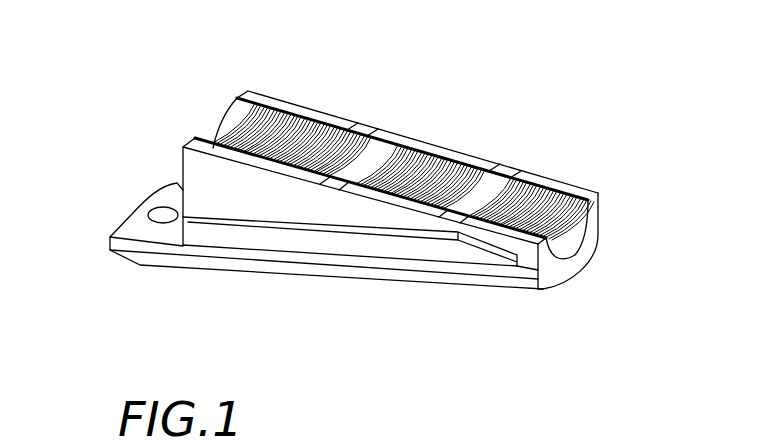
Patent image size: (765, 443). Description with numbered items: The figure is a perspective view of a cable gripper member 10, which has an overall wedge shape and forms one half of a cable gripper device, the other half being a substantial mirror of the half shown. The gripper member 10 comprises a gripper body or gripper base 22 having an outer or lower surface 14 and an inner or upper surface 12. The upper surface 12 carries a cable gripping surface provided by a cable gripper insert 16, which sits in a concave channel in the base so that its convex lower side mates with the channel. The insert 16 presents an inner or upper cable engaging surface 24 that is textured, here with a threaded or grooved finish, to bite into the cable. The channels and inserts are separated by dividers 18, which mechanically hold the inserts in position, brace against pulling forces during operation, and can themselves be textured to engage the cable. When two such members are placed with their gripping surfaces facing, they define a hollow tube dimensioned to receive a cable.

The cable gripper member 10 is at (125, 80).
The upper surface 12 is at (205, 128).
The lower surface 14 is at (380, 283).
The cable gripper insert 16 is at (327, 112).
The dividers 18 is at (354, 163).
The gripper base 22 is at (260, 198).
The cable engaging surface 24 is at (565, 235).